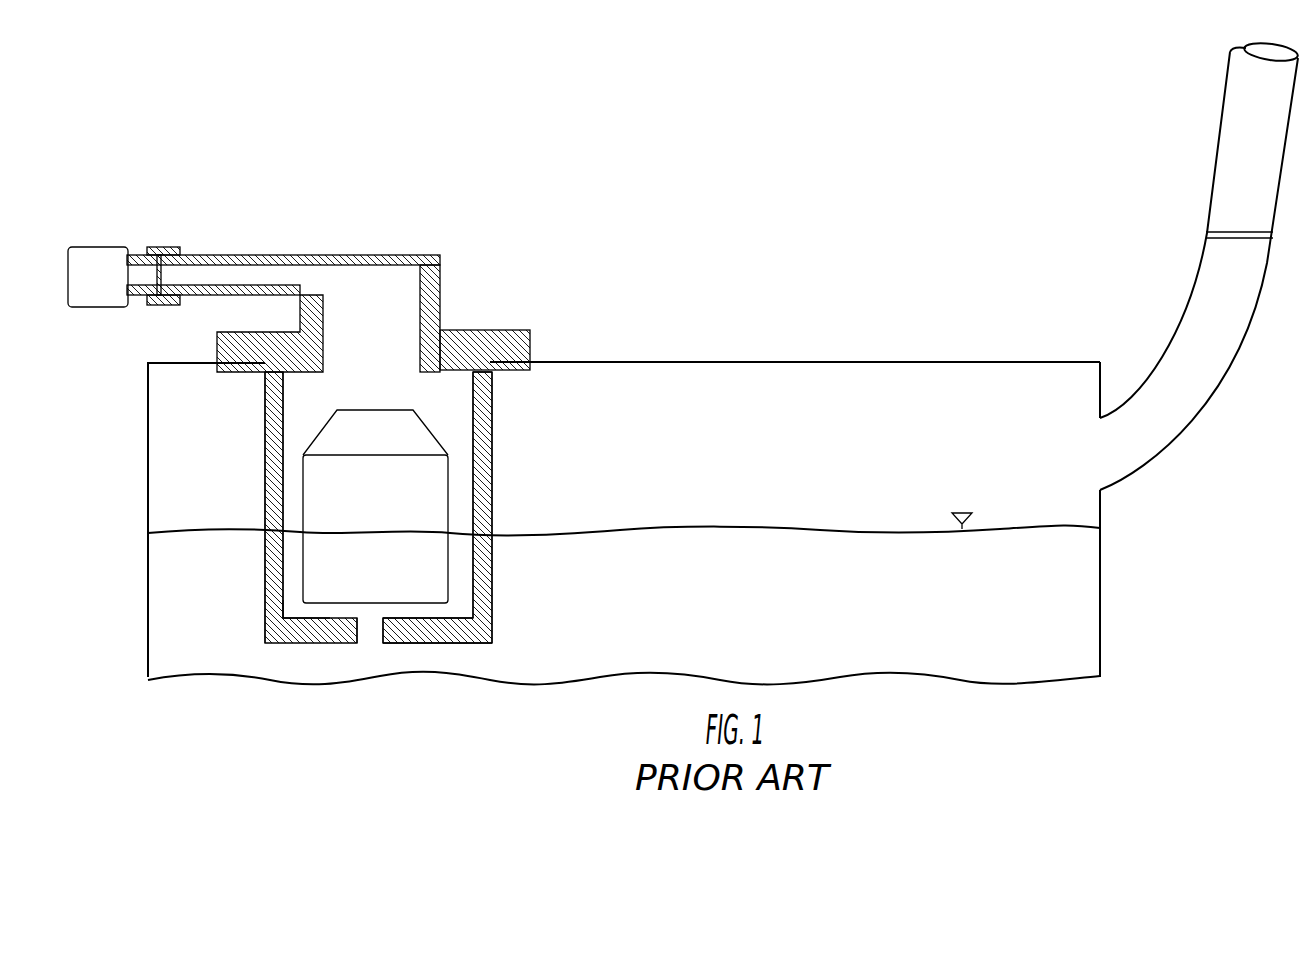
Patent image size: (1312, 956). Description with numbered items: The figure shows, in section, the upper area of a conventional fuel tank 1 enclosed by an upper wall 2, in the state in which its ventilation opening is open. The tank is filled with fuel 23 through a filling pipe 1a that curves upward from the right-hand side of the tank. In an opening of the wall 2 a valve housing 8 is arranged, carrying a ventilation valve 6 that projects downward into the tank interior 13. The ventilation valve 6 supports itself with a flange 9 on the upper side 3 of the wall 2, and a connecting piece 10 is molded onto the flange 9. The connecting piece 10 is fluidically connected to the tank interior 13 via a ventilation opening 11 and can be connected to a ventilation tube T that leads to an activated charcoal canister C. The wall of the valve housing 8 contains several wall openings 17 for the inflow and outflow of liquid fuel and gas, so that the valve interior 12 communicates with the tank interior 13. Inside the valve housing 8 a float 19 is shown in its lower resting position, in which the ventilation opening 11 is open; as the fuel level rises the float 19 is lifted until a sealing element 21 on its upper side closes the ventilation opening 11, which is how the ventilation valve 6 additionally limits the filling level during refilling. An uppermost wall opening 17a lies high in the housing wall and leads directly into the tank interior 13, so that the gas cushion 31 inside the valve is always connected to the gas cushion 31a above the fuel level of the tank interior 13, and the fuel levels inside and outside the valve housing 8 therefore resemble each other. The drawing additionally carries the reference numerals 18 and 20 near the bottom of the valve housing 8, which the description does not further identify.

The fuel tank 1 is at (1041, 355).
The filling pipe 1a is at (1214, 109).
The upper wall 2 is at (790, 358).
The upper side 3 is at (640, 357).
The ventilation valve 6 is at (272, 590).
The valve housing 8 is at (264, 458).
The flange 9 is at (507, 343).
The connecting piece 10 is at (231, 255).
The ventilation opening 11 is at (365, 362).
The valve interior 12 is at (461, 490).
The tank interior 13 is at (1047, 500).
The wall openings 17 is at (370, 634).
The uppermost wall opening 17a is at (482, 373).
The sub-tank bottom 18 is at (428, 634).
The float 19 is at (430, 590).
The bottom corner 20 is at (310, 634).
The sealing element 21 is at (350, 433).
The fuel 23 is at (1052, 618).
The gas cushion 31 is at (322, 393).
The gas cushion 31a is at (895, 405).
The activated charcoal canister C is at (117, 247).
The ventilation tube T is at (161, 247).